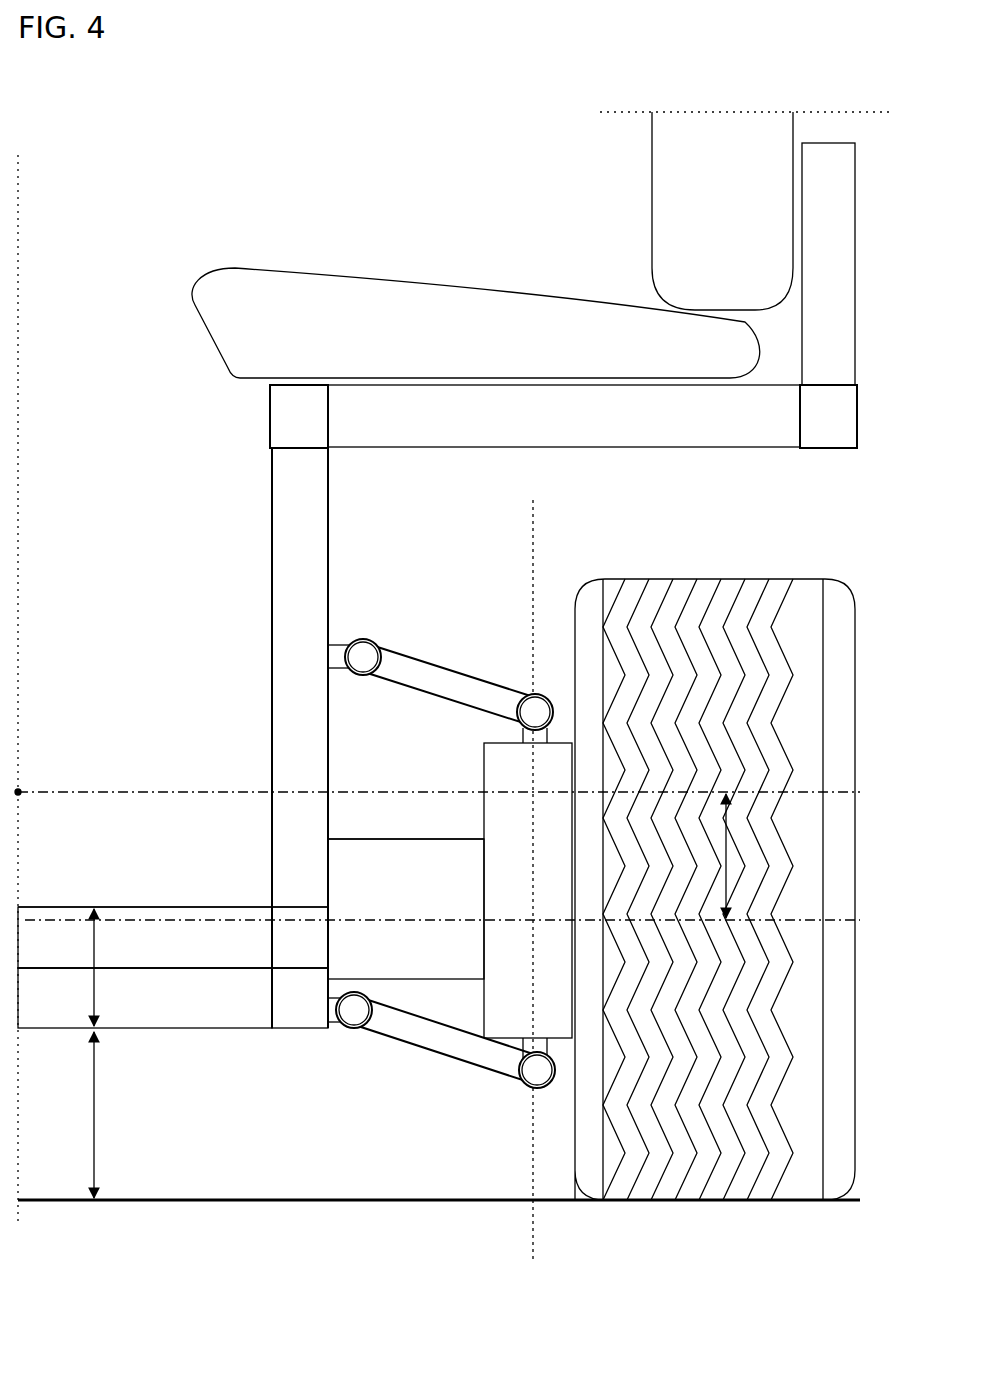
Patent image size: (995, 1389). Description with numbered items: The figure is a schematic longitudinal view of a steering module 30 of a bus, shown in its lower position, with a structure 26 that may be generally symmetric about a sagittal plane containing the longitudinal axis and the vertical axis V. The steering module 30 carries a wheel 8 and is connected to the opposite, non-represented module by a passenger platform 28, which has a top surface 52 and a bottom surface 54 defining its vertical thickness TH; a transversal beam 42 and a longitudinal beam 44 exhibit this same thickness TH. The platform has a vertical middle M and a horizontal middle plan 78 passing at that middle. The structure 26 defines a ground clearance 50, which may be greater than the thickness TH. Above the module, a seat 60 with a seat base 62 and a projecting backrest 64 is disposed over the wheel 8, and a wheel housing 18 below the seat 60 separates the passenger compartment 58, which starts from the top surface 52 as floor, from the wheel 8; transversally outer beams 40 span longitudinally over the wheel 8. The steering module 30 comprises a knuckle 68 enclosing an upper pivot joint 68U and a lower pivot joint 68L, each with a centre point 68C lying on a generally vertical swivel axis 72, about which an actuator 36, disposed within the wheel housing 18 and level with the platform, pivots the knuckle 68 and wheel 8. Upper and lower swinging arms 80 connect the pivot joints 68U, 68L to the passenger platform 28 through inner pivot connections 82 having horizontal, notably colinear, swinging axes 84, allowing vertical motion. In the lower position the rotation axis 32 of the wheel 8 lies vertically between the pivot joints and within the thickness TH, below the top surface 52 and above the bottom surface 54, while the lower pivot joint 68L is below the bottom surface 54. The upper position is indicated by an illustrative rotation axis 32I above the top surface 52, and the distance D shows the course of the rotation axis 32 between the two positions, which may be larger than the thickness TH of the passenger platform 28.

The wheel 8 is at (748, 1020).
The wheel housing 18 is at (382, 503).
The structure 26 is at (135, 585).
The passenger platform 28 is at (389, 1165).
The steering module 30 is at (386, 840).
The rotation axis 32 is at (163, 918).
The illustrative rotation axis 32I is at (192, 790).
The actuator 36 is at (408, 900).
The transversally outer beam 40 is at (846, 432).
The transversal beam 42 is at (249, 960).
The longitudinal beam 44 is at (319, 1017).
The ground clearance 50 is at (116, 1115).
The top surface 52 is at (248, 905).
The bottom surface 54 is at (40, 1035).
The passenger compartment 58 is at (144, 127).
The seat 60 is at (390, 188).
The seat base 62 is at (328, 347).
The backrest 64 is at (741, 235).
The knuckle 68 is at (533, 898).
The upper pivot joint 68U is at (532, 700).
The lower pivot joint 68L is at (532, 1085).
The centre point 68C is at (532, 712).
The vertical swivel axis 72 is at (538, 530).
The horizontal middle plan 78 is at (193, 970).
The swinging arm 80 is at (440, 668).
The inner pivot connection 82 is at (362, 662).
The swinging axis 84 is at (363, 655).
The distance D is at (742, 856).
The longitudinal axis L is at (20, 790).
The vertical middle M is at (232, 985).
The thickness TH is at (117, 967).
The vertical axis V is at (20, 352).